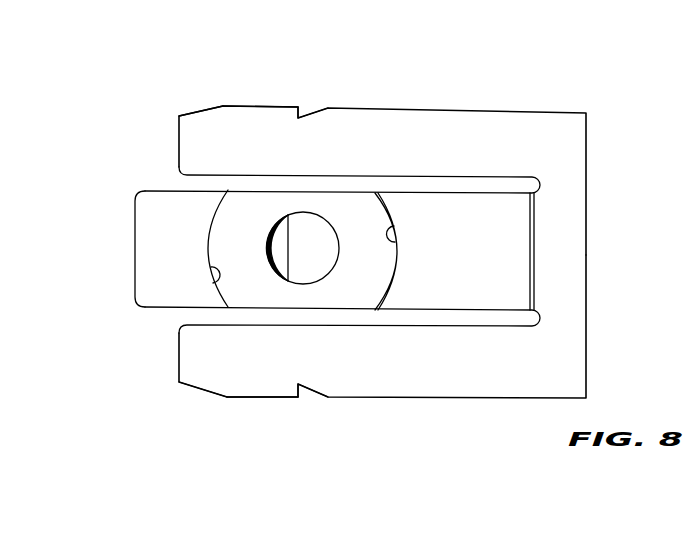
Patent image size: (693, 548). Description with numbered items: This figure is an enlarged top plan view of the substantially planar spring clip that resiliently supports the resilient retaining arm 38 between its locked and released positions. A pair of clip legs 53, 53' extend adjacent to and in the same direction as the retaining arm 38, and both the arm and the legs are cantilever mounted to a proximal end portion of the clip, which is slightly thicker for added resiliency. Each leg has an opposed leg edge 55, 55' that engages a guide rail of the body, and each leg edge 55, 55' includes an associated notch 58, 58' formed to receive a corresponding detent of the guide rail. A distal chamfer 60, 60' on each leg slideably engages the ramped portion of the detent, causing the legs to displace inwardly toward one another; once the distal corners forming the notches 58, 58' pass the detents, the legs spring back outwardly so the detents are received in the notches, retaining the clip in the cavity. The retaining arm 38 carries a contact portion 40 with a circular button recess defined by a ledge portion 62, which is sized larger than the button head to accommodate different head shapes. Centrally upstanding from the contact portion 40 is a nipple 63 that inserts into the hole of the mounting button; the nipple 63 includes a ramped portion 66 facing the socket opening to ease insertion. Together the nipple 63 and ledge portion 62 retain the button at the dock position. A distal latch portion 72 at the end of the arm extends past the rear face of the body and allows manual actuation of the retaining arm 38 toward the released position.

The retaining arm 38 is at (425, 184).
The contact portion 40 is at (250, 300).
The clip leg 53 is at (435, 256).
The clip leg 53' is at (382, 154).
The leg edge 55 is at (262, 433).
The leg edge 55' is at (260, 72).
The notch 58 is at (305, 419).
The notch 58' is at (330, 87).
The distal chamfer 60 is at (182, 412).
The distal chamfer 60' is at (196, 81).
The ledge portion 62 is at (210, 267).
The nipple 63 is at (278, 218).
The ramped portion 66 is at (320, 235).
The distal latch portion 72 is at (152, 210).